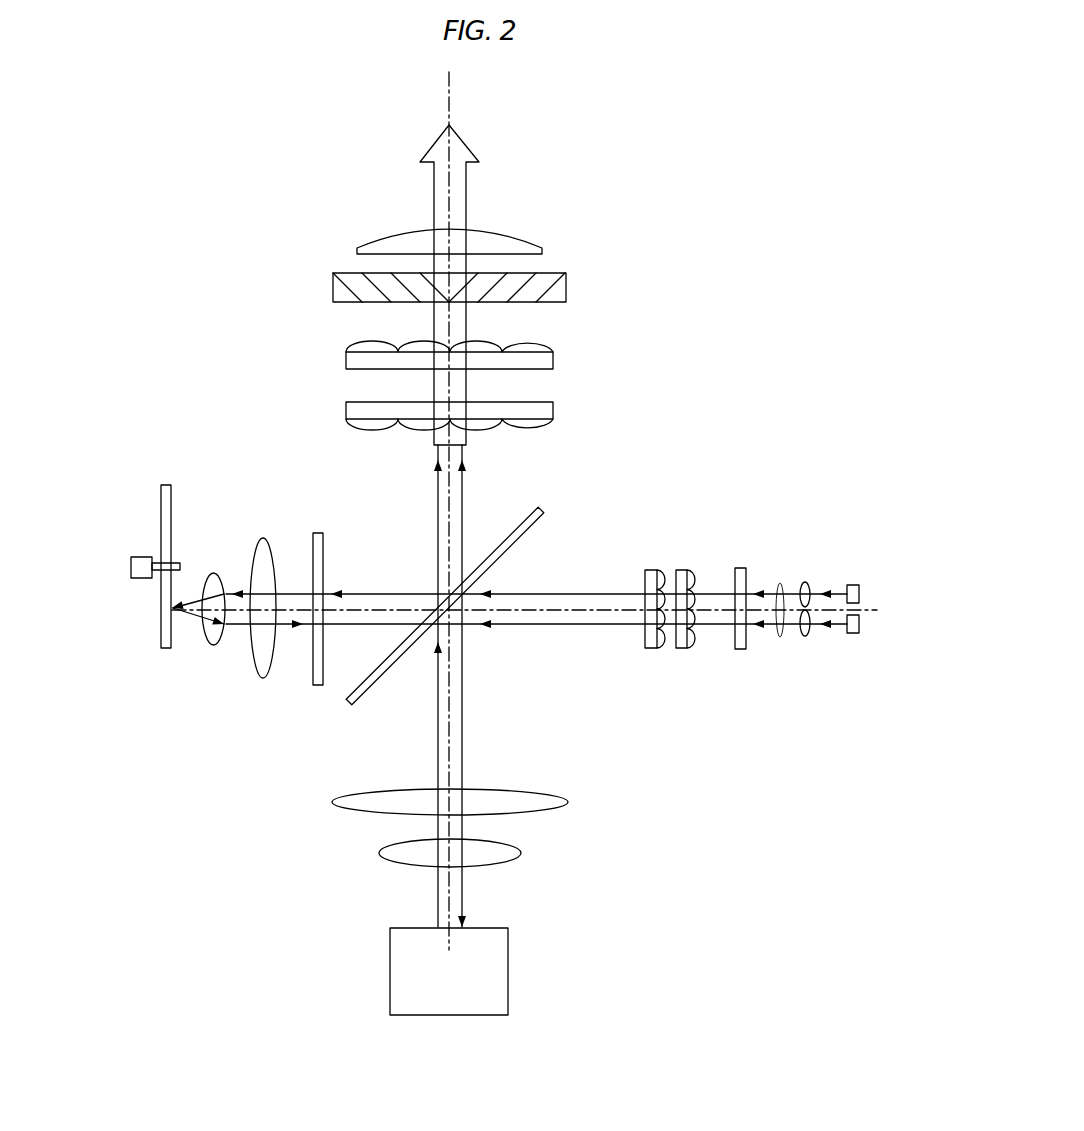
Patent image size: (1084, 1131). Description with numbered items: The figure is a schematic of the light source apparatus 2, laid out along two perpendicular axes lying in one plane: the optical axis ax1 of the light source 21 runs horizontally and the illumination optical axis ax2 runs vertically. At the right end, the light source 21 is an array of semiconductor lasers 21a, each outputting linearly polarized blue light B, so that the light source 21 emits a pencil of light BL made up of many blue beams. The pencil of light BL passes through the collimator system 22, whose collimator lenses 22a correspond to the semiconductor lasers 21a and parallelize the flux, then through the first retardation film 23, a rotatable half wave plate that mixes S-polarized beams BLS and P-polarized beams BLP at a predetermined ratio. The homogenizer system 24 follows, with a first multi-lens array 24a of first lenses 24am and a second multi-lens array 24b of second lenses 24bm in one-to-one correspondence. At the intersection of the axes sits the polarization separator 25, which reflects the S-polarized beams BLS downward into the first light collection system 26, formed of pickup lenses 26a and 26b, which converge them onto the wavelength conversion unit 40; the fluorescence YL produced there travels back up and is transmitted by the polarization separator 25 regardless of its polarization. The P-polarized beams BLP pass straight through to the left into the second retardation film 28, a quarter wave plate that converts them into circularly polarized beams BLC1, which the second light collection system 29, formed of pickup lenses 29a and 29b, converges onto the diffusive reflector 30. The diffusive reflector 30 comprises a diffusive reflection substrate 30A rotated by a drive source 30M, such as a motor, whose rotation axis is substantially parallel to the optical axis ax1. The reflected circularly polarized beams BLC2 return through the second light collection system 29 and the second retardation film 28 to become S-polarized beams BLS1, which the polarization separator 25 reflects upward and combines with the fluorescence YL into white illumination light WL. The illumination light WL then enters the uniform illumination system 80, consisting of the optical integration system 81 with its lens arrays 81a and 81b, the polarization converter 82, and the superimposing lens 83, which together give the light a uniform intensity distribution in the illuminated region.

The light source apparatus 2 is at (768, 124).
The light source 21 is at (855, 599).
The semiconductor laser 21a is at (852, 634).
The collimator system 22 is at (803, 595).
The collimator lens 22a is at (806, 638).
The first retardation film 23 is at (742, 651).
The homogenizer system 24 is at (667, 589).
The first multi-lens array 24a is at (687, 560).
The first lens 24am is at (692, 641).
The second multi-lens array 24b is at (652, 560).
The second lens 24bm is at (660, 641).
The polarization separator 25 is at (538, 509).
The first light collection system 26 is at (521, 834).
The pickup lens 26a is at (568, 802).
The pickup lens 26b is at (521, 853).
The second retardation film 28 is at (318, 532).
The second light collection system 29 is at (214, 656).
The pickup lens 29a is at (253, 660).
The pickup lens 29b is at (208, 642).
The diffusive reflector 30 is at (180, 518).
The diffusive reflection substrate 30A is at (171, 522).
The drive source 30M is at (138, 556).
The wavelength conversion unit 40 is at (535, 983).
The uniform illumination system 80 is at (534, 328).
The optical integration system 81 is at (514, 385).
The lens array 81a is at (553, 410).
The lens array 81b is at (553, 360).
The polarization converter 82 is at (566, 290).
The superimposing lens 83 is at (545, 247).
The illumination light WL is at (432, 181).
The fluorescence YL is at (436, 545).
The pencil of light BL is at (778, 585).
The blue light B is at (838, 592).
The P-polarized beams BLP is at (390, 592).
The S-polarized beams BLS is at (556, 627).
The S-polarized beams BLS1 is at (464, 545).
The circularly polarized beams BLC1 is at (291, 593).
The circularly polarized beams BLC2 is at (285, 628).
The optical axis ax1 is at (868, 613).
The illumination optical axis ax2 is at (451, 90).